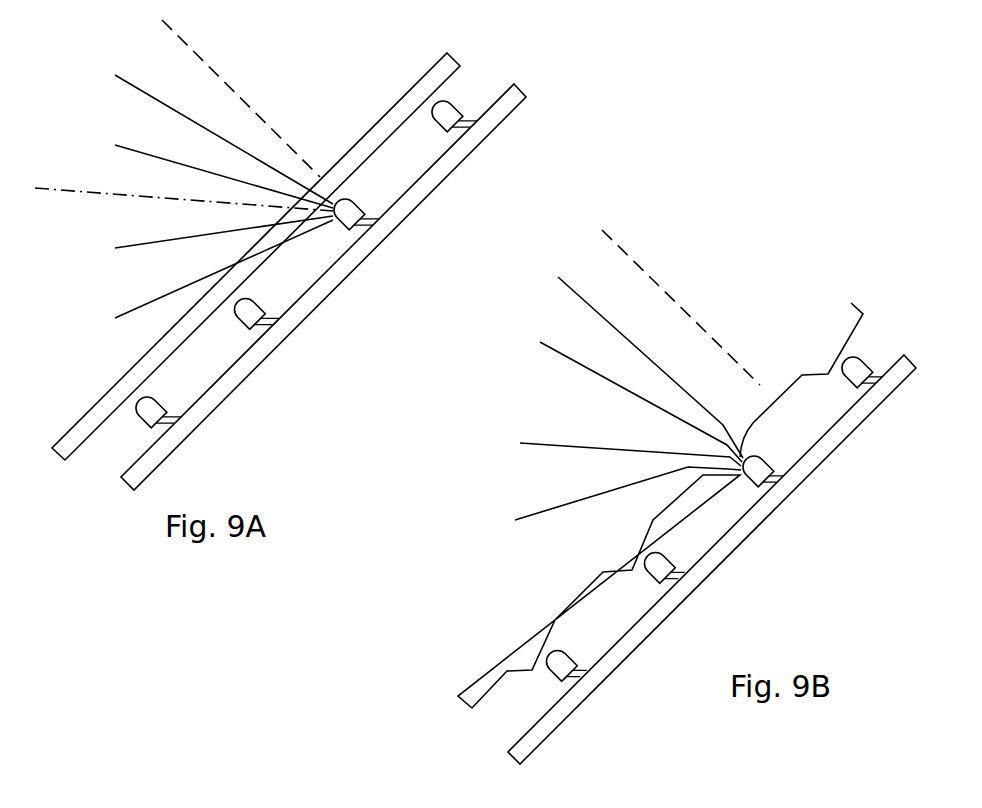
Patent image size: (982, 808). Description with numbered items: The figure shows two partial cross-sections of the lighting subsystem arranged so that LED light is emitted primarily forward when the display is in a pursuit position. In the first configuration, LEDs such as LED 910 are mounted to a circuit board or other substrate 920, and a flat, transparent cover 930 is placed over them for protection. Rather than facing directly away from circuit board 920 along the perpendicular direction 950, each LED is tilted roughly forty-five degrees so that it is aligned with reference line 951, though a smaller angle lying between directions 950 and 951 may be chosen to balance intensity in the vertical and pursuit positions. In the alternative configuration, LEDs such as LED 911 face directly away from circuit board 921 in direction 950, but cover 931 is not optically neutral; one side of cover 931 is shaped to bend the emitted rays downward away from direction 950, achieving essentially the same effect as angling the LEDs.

In FIG. 9A, the LED 910 is at (457, 95).
In FIG. 9B, the LED 911 is at (863, 360).
In FIG. 9A, the circuit board 920 is at (450, 172).
In FIG. 9B, the circuit board 921 is at (853, 437).
In FIG. 9A, the flat, transparent cover 930 is at (402, 97).
In FIG. 9B, the cover 931 is at (532, 618).
In FIG. 9A, the perpendicular direction 950 is at (217, 75).
In FIG. 9B, the perpendicular direction 950 is at (658, 283).
In FIG. 9A, the reference line 951 is at (88, 192).